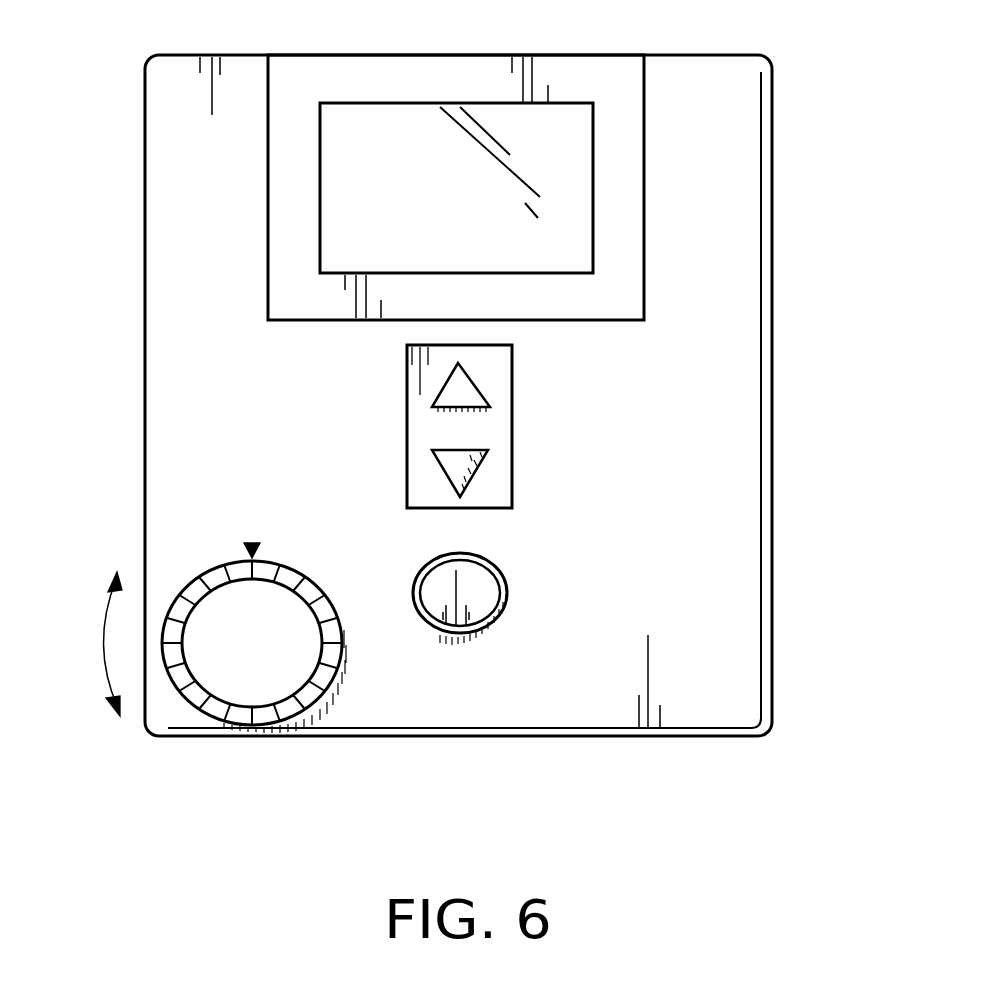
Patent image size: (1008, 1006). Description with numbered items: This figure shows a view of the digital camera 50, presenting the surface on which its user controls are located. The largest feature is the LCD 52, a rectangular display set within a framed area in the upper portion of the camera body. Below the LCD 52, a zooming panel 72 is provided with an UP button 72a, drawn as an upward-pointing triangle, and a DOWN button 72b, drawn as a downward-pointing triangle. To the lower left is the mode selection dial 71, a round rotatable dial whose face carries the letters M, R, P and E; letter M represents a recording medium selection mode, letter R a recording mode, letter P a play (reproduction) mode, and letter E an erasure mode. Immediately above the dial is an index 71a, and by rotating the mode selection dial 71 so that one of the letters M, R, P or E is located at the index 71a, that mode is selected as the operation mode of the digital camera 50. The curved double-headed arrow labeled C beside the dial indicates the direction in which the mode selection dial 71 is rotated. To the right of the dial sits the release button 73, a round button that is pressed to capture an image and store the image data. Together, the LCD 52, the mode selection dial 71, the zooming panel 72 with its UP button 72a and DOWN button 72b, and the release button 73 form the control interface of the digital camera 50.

The digital camera 50 is at (785, 282).
The LCD 52 is at (418, 127).
The mode selection dial 71 is at (182, 703).
The index 71a is at (249, 548).
The zooming panel 72 is at (406, 432).
The UP button 72a is at (463, 393).
The DOWN button 72b is at (478, 456).
The release button 73 is at (493, 603).
The rotation direction C is at (95, 648).